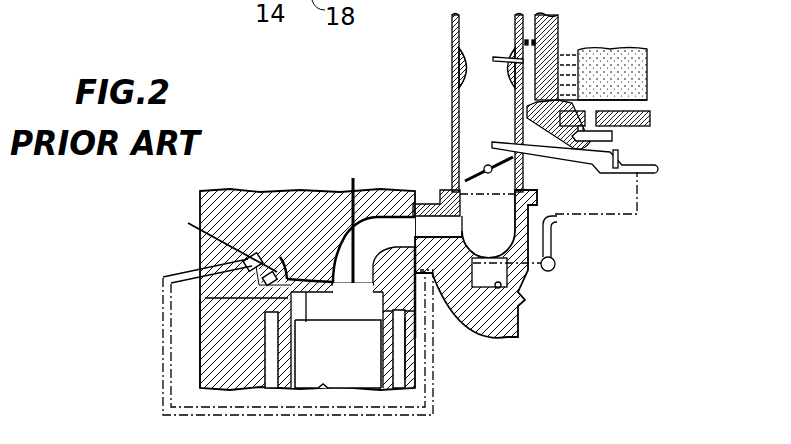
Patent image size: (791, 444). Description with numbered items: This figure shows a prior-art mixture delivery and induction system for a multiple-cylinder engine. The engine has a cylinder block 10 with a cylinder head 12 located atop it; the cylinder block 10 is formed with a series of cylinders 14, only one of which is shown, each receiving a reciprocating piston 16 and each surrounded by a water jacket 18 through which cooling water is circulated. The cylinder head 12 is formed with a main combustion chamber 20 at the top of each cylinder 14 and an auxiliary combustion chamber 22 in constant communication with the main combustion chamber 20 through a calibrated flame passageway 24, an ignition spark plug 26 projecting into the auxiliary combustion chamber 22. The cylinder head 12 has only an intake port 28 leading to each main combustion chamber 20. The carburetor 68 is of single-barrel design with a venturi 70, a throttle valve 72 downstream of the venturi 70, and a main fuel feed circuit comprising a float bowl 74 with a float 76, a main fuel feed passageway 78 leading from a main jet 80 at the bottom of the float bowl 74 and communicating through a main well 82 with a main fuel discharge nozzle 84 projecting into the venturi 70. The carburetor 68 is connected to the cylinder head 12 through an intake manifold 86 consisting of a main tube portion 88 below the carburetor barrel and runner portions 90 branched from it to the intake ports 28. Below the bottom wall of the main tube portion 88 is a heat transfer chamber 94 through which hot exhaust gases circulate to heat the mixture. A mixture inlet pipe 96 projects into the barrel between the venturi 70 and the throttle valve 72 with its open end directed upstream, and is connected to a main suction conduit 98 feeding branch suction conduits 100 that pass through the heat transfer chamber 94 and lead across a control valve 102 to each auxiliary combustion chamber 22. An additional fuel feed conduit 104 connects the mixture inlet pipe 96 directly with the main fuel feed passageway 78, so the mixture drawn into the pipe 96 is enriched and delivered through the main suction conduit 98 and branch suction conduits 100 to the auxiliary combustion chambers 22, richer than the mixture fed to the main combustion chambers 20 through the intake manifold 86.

The cylinder block 10 is at (223, 335).
The cylinder head 12 is at (278, 196).
The cylinder 14 is at (380, 375).
The piston 16 is at (338, 380).
The water jacket 18 is at (402, 379).
The main combustion chamber 20 is at (342, 292).
The auxiliary combustion chamber 22 is at (282, 270).
The flame passageway 24 is at (307, 323).
The ignition spark plug 26 is at (266, 257).
The intake port 28 is at (380, 196).
The carburetor 68 is at (452, 95).
The venturi 70 is at (462, 70).
The throttle valve 72 is at (465, 160).
The float bowl 74 is at (552, 13).
The float 76 is at (627, 56).
The main fuel feed passageway 78 is at (566, 117).
The main jet 80 is at (613, 134).
The main well 82 is at (533, 53).
The main fuel discharge nozzle 84 is at (497, 58).
The intake manifold 86 is at (538, 213).
The main tube portion 88 is at (505, 232).
The runner portion 90 is at (437, 236).
The heat transfer chamber 94 is at (523, 303).
The mixture inlet pipe 96 is at (505, 139).
The main suction conduit 98 is at (593, 215).
The branch suction conduit 100 is at (435, 373).
The control valve 102 is at (250, 257).
The additional fuel feed conduit 104 is at (619, 153).